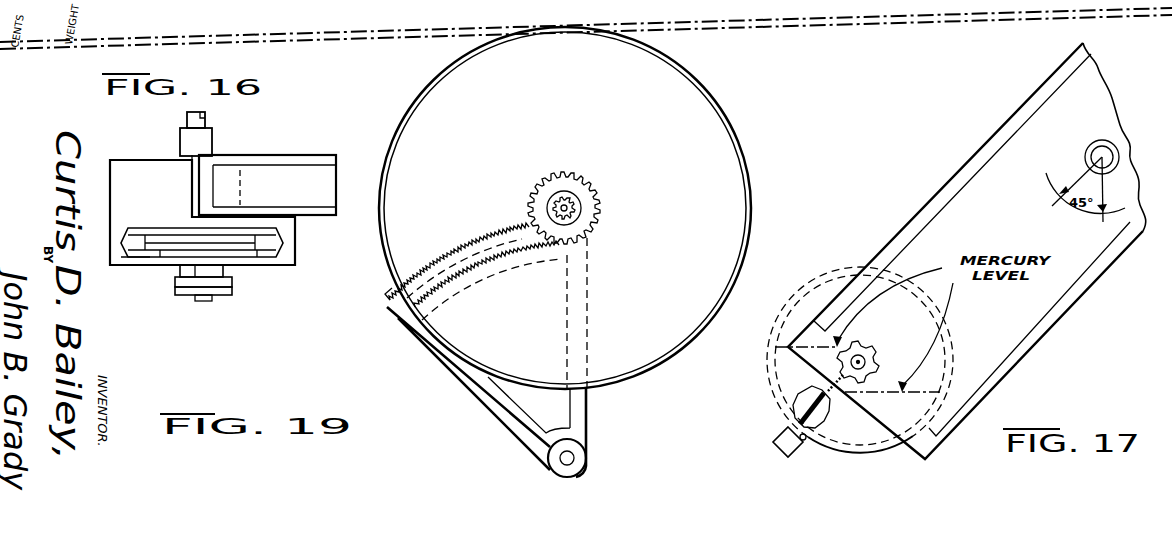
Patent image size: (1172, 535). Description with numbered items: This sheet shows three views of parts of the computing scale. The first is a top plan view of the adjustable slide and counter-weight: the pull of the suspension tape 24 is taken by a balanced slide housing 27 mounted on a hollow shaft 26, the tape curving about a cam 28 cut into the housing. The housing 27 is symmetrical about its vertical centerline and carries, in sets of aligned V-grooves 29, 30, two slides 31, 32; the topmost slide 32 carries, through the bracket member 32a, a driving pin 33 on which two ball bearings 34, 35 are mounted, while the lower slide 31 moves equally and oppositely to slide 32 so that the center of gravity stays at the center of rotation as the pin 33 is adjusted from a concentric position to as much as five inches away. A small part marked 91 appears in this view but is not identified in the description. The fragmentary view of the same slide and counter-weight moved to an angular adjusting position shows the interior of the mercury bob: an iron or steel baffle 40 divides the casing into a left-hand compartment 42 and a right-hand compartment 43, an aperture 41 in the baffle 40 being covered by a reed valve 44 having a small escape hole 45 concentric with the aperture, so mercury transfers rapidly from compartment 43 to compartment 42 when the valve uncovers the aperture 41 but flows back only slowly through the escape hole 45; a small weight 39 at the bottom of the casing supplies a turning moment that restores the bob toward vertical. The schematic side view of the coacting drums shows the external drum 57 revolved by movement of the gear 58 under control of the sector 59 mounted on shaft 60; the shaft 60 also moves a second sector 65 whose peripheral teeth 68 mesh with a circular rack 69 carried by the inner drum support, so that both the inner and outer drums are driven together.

In FIG. 16, the tape 24 is at (318, 186).
In FIG. 16, the hollow shaft 26 is at (216, 138).
In FIG. 17, the hollow shaft 26 is at (1087, 141).
In FIG. 16, the slide housing 27 is at (128, 172).
In FIG. 16, the cam 28 is at (278, 160).
In FIG. 16, the V-grooves 29 is at (121, 245).
In FIG. 16, the V-grooves 30 is at (123, 266).
In FIG. 16, the lower slide 31 is at (160, 242).
In FIG. 16, the slide 32 is at (168, 268).
In FIG. 16, the bracket member 32a is at (195, 270).
In FIG. 16, the pin 33 is at (203, 302).
In FIG. 16, the ball bearing 34 is at (234, 282).
In FIG. 16, the ball bearing 35 is at (234, 291).
In FIG. 19, the external drum 57 is at (717, 107).
In FIG. 19, the gear 58 is at (547, 196).
In FIG. 19, the circular rack 69 is at (598, 193).
In FIG. 19, the sector 59 is at (388, 306).
In FIG. 19, the peripheral teeth 68 is at (408, 327).
In FIG. 19, the sector 65 is at (483, 390).
In FIG. 19, the shaft 60 is at (549, 465).
In FIG. 17, the weight 39 is at (778, 450).
In FIG. 17, the baffle 40 is at (874, 384).
In FIG. 17, the aperture 41 is at (816, 434).
In FIG. 17, the compartment 42 is at (796, 398).
In FIG. 17, the compartment 43 is at (846, 445).
In FIG. 17, the reed valve 44 is at (800, 437).
In FIG. 17, the escape hole 45 is at (798, 422).
In FIG. 16, the adjusting head 91 is at (187, 119).